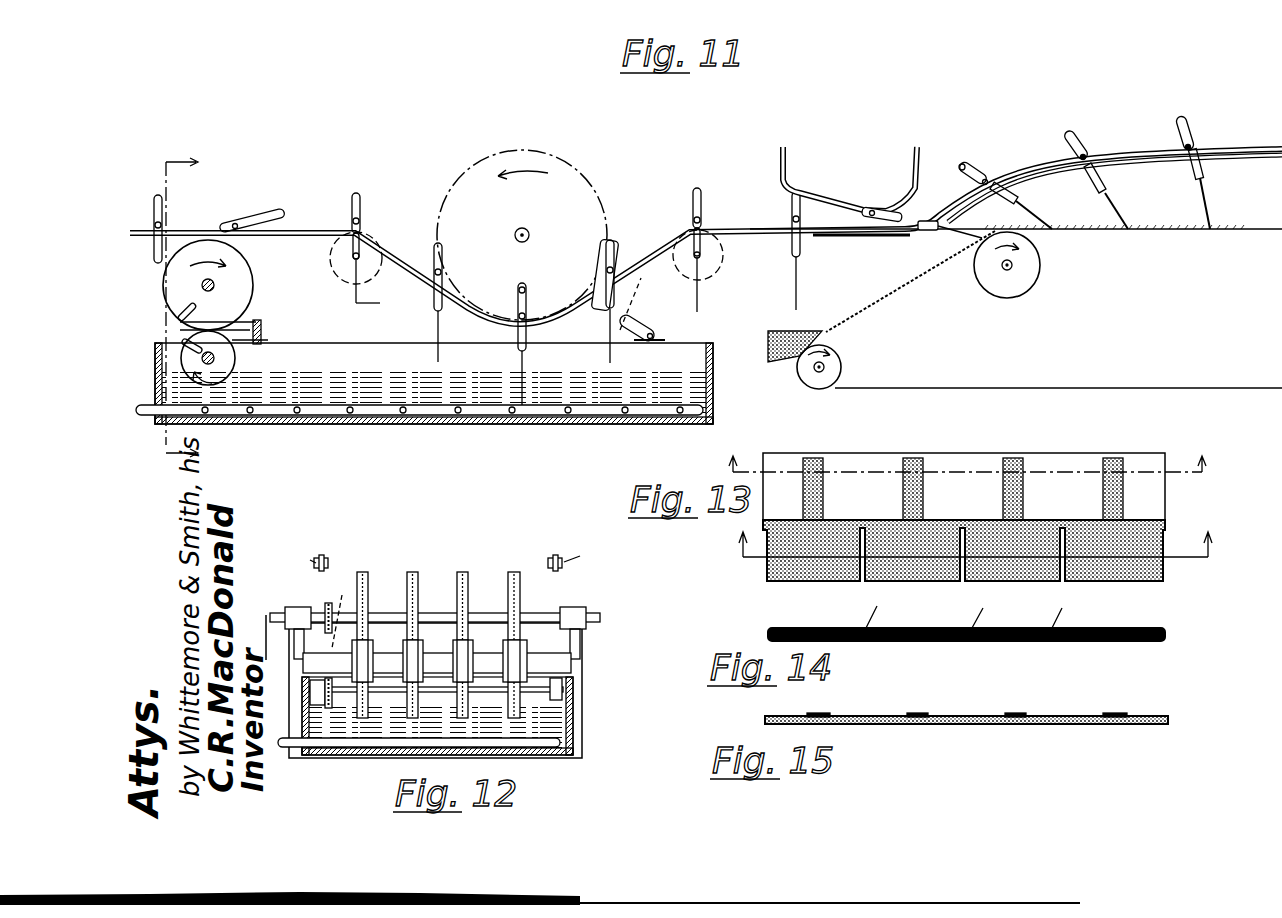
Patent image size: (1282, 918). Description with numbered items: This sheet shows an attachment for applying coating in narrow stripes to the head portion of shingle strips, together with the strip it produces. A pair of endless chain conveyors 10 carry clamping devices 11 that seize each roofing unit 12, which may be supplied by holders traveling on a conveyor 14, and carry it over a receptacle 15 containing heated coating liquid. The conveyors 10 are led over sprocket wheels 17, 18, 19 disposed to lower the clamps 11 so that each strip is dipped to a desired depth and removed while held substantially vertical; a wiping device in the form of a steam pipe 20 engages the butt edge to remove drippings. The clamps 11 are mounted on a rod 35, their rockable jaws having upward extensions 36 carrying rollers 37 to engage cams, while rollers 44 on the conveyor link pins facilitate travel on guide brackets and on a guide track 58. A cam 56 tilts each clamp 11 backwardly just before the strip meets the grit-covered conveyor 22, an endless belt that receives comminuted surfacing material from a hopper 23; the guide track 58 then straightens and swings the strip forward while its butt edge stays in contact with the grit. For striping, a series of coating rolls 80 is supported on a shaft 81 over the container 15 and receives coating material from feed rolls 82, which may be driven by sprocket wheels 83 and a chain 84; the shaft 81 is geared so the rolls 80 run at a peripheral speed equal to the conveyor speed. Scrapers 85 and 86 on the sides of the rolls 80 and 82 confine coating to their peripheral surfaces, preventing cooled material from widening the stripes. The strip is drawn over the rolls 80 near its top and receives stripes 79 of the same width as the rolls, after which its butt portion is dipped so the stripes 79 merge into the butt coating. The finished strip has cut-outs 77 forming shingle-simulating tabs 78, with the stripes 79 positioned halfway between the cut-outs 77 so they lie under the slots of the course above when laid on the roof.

In FIG. 11, the endless conveyors 10 is at (313, 229).
In FIG. 12, the endless conveyors 10 is at (447, 550).
In FIG. 11, the clamping devices 11 is at (218, 227).
In FIG. 11, the roofing units 12 is at (806, 268).
In FIG. 13, the conveyor 14 is at (975, 535).
In FIG. 11, the receptacle 15 is at (315, 372).
In FIG. 12, the receptacle 15 is at (366, 740).
In FIG. 13, the receptacle 15 is at (971, 452).
In FIG. 11, the sprocket wheel 17 is at (336, 259).
In FIG. 11, the sprocket wheel 18 is at (464, 186).
In FIG. 11, the sprocket wheel 19 is at (722, 266).
In FIG. 11, the steam pipe 20 is at (632, 320).
In FIG. 11, the conveyor 22 is at (908, 282).
In FIG. 11, the hopper 23 is at (777, 371).
In FIG. 11, the rod 35 is at (704, 222).
In FIG. 11, the extensions 36 is at (963, 175).
In FIG. 11, the rollers 37 is at (697, 195).
In FIG. 12, the roller 44 is at (326, 558).
In FIG. 11, the cam 56 is at (835, 201).
In FIG. 11, the guide track 58 is at (1147, 177).
In FIG. 13, the cut-outs 77 is at (863, 580).
In FIG. 13, the shingle-simulating tabs 78 is at (827, 565).
In FIG. 13, the stripes 79 is at (822, 497).
In FIG. 15, the stripes 79 is at (917, 713).
In FIG. 11, the coating rolls 80 is at (238, 303).
In FIG. 12, the coating rolls 80 is at (410, 574).
In FIG. 11, the shaft 81 is at (215, 284).
In FIG. 12, the shaft 81 is at (599, 614).
In FIG. 11, the feed rolls 82 is at (238, 359).
In FIG. 12, the sprocket wheels 83 is at (318, 697).
In FIG. 12, the chain 84 is at (331, 612).
In FIG. 11, the scrapers 85 is at (176, 318).
In FIG. 12, the scrapers 85 is at (404, 652).
In FIG. 11, the scrapers 86 is at (180, 346).
In FIG. 12, the scrapers 86 is at (450, 660).